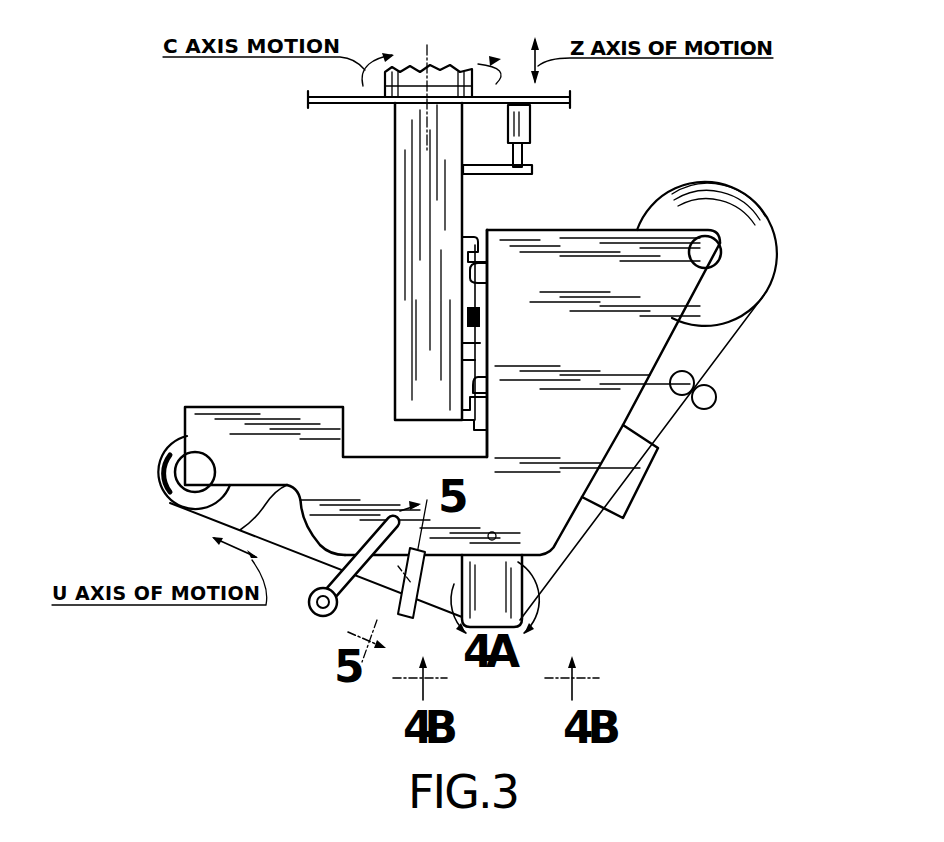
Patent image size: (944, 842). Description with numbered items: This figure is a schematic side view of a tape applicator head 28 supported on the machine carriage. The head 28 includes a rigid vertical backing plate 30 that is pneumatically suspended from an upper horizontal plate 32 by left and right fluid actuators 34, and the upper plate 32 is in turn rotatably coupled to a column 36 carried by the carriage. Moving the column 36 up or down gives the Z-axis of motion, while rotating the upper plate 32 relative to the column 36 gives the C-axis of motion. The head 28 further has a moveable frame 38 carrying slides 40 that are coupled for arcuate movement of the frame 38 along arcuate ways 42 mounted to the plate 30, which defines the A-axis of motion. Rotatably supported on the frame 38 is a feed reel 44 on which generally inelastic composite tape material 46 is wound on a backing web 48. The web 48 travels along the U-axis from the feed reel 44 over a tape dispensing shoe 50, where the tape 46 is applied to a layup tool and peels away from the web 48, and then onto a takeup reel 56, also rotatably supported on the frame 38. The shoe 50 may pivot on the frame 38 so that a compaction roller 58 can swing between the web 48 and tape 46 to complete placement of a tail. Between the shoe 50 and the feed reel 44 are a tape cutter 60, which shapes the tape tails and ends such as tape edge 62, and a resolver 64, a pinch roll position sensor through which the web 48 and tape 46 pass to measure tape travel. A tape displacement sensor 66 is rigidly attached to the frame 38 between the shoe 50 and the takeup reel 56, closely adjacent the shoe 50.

The tape applicator head 28 is at (270, 213).
The backing plate 30 is at (395, 288).
The upper plate 32 is at (557, 106).
The fluid actuators 34 is at (533, 143).
The column 36 is at (432, 75).
The moveable frame 38 is at (572, 276).
The slides 40 is at (487, 280).
The arcuate ways 42 is at (462, 241).
The feed reel 44 is at (770, 222).
The composite tape material 46 is at (728, 343).
The backing web 48 is at (688, 350).
The tape dispensing shoe 50 is at (513, 557).
The takeup reel 56 is at (168, 500).
The compaction roller 58 is at (313, 617).
The tape cutter 60 is at (665, 448).
The tape edge 62 is at (424, 558).
The resolver 64 is at (728, 400).
The tape displacement sensor 66 is at (402, 640).